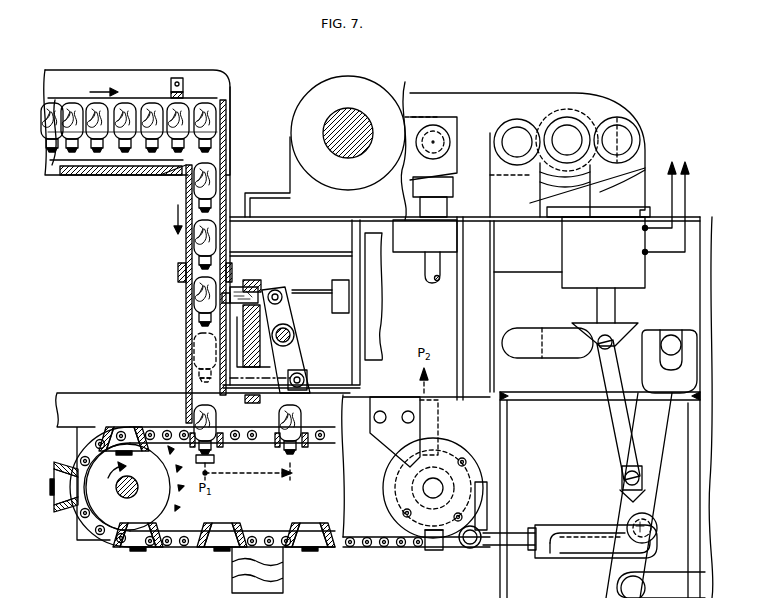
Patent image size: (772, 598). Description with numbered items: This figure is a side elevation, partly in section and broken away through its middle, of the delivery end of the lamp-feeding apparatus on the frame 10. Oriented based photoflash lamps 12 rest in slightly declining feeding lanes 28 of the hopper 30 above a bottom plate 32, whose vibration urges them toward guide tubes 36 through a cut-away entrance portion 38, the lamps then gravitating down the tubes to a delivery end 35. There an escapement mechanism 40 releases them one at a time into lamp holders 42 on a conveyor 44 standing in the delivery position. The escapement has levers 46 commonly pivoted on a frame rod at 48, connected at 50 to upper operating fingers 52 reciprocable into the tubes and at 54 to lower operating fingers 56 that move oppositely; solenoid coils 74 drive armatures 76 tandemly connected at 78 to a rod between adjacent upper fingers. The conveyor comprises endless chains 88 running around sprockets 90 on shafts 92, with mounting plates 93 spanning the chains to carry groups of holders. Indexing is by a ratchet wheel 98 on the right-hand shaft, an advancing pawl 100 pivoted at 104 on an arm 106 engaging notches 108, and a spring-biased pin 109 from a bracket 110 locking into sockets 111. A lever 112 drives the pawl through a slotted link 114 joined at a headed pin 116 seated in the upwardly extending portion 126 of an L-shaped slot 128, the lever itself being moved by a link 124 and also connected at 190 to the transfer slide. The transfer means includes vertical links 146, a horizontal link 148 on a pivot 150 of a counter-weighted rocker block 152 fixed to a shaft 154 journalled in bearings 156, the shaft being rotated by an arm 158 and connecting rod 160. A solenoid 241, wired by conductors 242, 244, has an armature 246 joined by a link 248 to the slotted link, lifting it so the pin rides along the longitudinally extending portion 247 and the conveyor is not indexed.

The frame 10 is at (88, 392).
The based photoflash lamps 12 is at (176, 103).
The feeding lanes 28 is at (68, 166).
The hopper 30 is at (50, 137).
The bottom plate 32 is at (90, 176).
The delivery end 35 is at (213, 425).
The guide tubes 36 is at (228, 186).
The entrance portion 38 is at (183, 176).
The escapement mechanism 40 is at (254, 274).
The lamp holders 42 is at (122, 427).
The conveyor 44 is at (172, 552).
The levers 46 is at (300, 360).
The pivot 48 is at (295, 335).
The connection 50 is at (282, 292).
The upper operating fingers 52 is at (236, 286).
The connection 54 is at (308, 378).
The lower operating fingers 56 is at (252, 404).
The coils 74 is at (373, 232).
The armatures 76 is at (324, 295).
The connection 78 is at (285, 282).
The endless chains 88 is at (185, 548).
The sprockets 90 is at (170, 505).
The shafts 92 is at (423, 489).
The mounting plates 93 is at (300, 525).
The ratchet wheel 98 is at (470, 468).
The advancing pawl 100 is at (440, 550).
The pawl pivot 104 is at (472, 548).
The arm 106 is at (490, 508).
The notches 108 is at (420, 470).
The spring-biased pin 109 is at (395, 470).
The bracket 110 is at (390, 397).
The sockets 111 is at (400, 513).
The lever 112 is at (645, 440).
The slotted link 114 is at (550, 558).
The headed pin 116 is at (628, 525).
The link 124 is at (620, 588).
The upwardly extending portion 126 is at (648, 505).
The L-shaped slot 128 is at (580, 535).
The vertical links 146 is at (645, 165).
The horizontal link 148 is at (610, 118).
The pivot 150 is at (567, 118).
The rocker block 152 is at (405, 92).
The shaft 154 is at (335, 125).
The bearings 156 is at (292, 140).
The arm 158 is at (425, 120).
The connecting rod 160 is at (442, 266).
The connection 190 is at (671, 336).
The solenoid 241 is at (645, 285).
The conductor 242 is at (688, 178).
The conductor 244 is at (676, 168).
The armature 246 is at (600, 304).
The longitudinally extending portion 247 is at (562, 532).
The link 248 is at (612, 423).